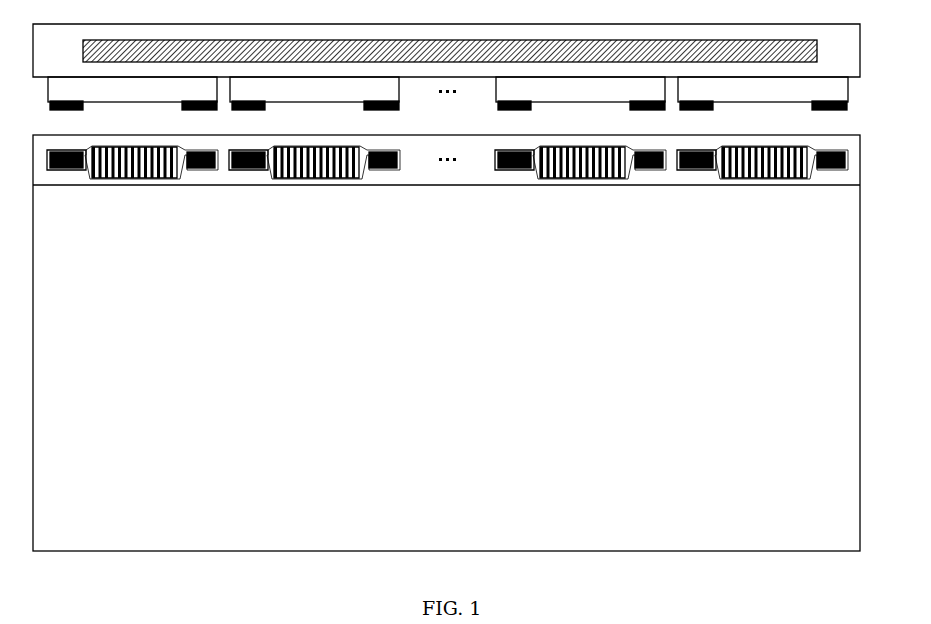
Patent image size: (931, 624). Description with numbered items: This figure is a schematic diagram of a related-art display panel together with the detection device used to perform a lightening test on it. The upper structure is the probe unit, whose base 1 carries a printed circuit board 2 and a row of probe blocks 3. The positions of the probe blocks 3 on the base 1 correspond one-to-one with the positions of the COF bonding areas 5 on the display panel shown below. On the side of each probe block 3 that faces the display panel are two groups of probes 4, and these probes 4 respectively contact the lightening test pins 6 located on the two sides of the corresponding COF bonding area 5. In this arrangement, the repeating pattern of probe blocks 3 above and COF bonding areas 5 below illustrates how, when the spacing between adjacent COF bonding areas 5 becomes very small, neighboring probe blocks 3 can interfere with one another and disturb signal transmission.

The base 1 is at (452, 40).
The printed circuit board 2 is at (795, 43).
The probe block 3 is at (850, 78).
The probes 4 is at (843, 107).
The COF bonding area 5 is at (765, 176).
The lightening test pins 6 is at (822, 168).